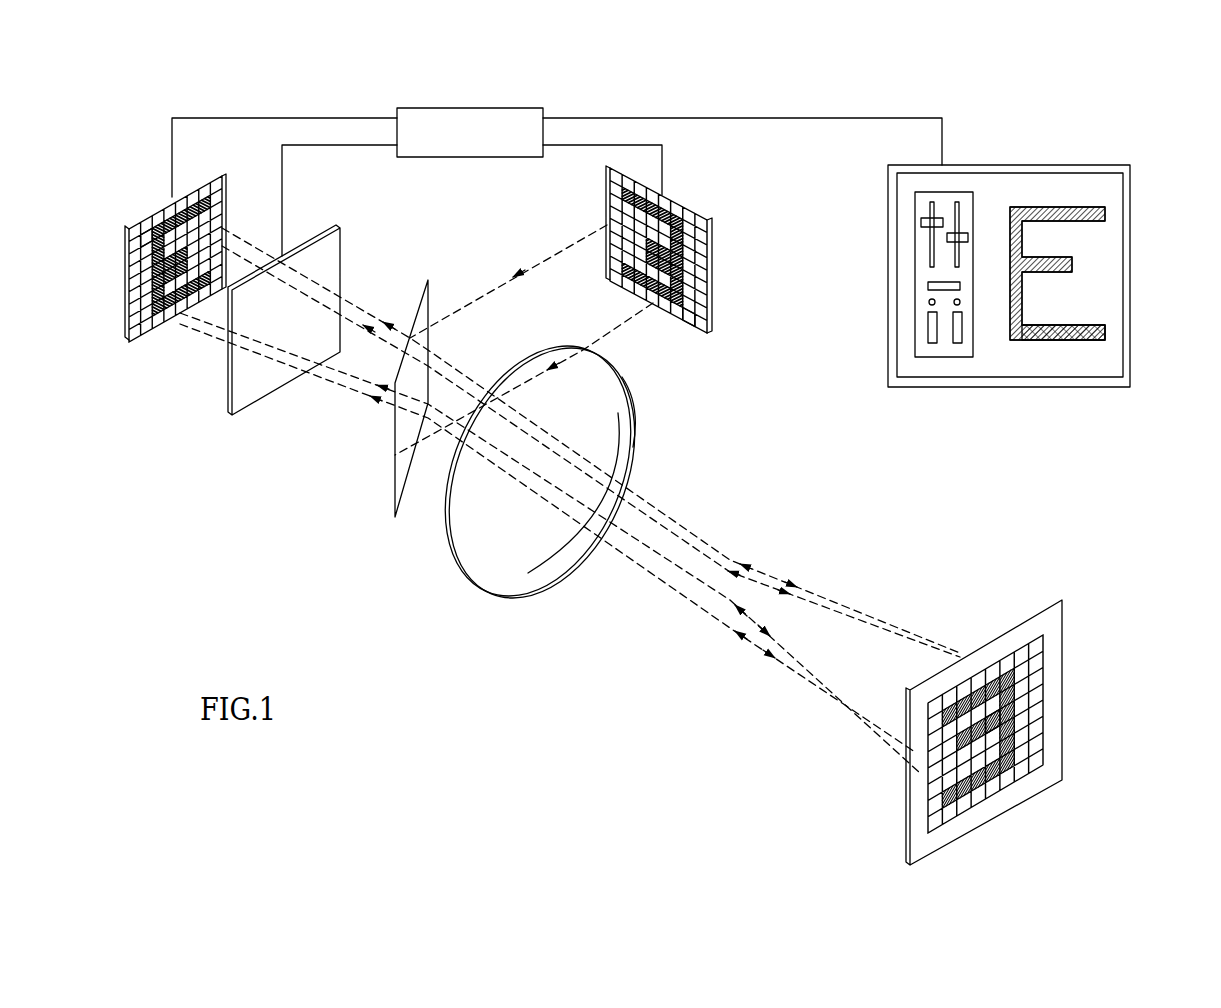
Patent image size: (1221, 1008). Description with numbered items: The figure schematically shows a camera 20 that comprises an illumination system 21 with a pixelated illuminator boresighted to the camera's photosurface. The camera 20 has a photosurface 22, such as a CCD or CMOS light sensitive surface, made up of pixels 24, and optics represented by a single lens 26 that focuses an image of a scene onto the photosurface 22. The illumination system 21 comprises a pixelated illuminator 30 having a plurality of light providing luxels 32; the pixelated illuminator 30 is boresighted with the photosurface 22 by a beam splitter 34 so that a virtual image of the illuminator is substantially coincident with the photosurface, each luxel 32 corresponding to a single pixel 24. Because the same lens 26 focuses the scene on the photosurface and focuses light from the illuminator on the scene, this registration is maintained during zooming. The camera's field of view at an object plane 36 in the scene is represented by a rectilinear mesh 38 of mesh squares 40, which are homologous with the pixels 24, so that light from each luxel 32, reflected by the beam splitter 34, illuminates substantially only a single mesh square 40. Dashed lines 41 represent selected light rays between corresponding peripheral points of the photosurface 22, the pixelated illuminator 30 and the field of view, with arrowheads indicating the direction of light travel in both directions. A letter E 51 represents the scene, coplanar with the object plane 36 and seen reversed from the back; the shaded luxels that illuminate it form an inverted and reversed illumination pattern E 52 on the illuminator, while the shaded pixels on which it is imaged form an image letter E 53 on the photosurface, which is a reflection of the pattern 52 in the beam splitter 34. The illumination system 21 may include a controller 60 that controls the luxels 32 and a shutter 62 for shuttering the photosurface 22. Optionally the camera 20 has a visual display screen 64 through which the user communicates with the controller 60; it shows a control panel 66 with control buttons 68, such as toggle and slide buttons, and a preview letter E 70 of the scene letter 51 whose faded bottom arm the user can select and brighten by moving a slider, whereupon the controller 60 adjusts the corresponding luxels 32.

The camera 20 is at (1088, 107).
The illumination system 21 is at (207, 525).
The photosurface 22 is at (177, 266).
The pixels 24 is at (143, 327).
The lens 26 is at (600, 402).
The pixelated illuminator 30 is at (686, 263).
The luxels 32 is at (700, 288).
The beam splitter 34 is at (429, 305).
The object plane 36 is at (1019, 713).
The rectilinear mesh 38 is at (1030, 709).
The mesh squares 40 is at (1040, 697).
The dashed lines 41 is at (568, 356).
The letter E 51 is at (1025, 727).
The illumination pattern E 52 is at (690, 330).
The image letter E 53 is at (172, 207).
The controller 60 is at (523, 108).
The shutter 62 is at (340, 228).
The visual display screen 64 is at (1026, 258).
The control panel 66 is at (943, 243).
The control buttons 68 is at (927, 318).
The preview letter E 70 is at (1112, 214).